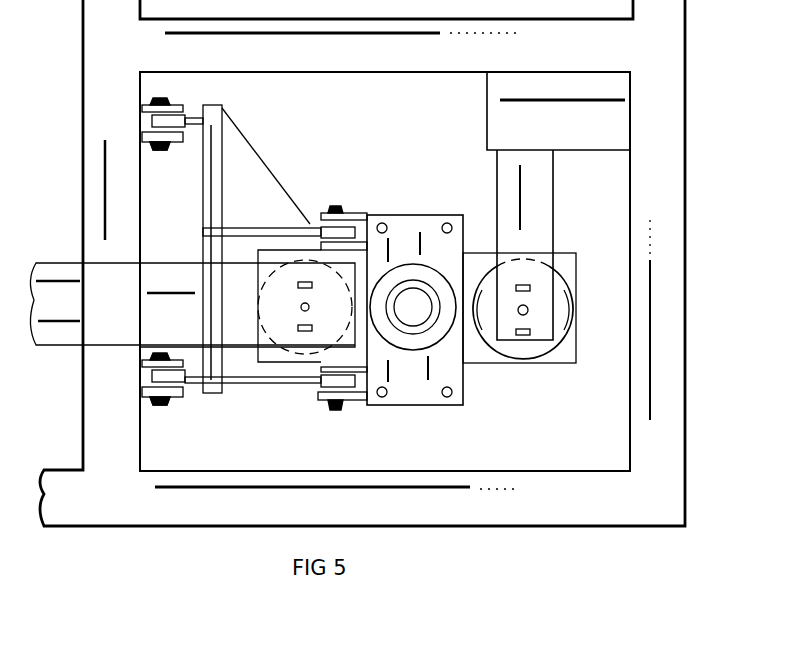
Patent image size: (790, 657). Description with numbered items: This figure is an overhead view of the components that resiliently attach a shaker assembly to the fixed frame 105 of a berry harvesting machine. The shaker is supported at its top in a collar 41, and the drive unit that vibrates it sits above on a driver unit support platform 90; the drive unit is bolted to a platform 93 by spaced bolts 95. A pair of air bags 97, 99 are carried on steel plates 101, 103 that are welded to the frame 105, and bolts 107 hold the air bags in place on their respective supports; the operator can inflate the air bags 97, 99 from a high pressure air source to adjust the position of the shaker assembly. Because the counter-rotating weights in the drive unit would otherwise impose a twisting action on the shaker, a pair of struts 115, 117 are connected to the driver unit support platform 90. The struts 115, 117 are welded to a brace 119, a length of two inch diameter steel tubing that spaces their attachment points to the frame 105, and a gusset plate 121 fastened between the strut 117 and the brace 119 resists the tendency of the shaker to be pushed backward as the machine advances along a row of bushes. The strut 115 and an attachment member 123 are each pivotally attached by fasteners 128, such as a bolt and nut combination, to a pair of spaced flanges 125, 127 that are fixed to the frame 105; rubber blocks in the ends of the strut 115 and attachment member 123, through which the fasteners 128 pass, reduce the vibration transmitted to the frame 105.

The collar 41 is at (413, 289).
The driver unit support platform 90 is at (449, 413).
The platform 93 is at (405, 397).
The bolts 95 is at (381, 398).
The air bag 97 is at (320, 262).
The air bag 99 is at (562, 303).
The steel plate 101 is at (182, 340).
The steel plate 103 is at (541, 197).
The frame 105 is at (680, 222).
The bolts 107 is at (304, 311).
The strut 115 is at (250, 382).
The strut 117 is at (280, 223).
The brace 119 is at (203, 207).
The gusset plate 121 is at (266, 166).
The attachment member 123 is at (192, 118).
The flange 125 is at (142, 391).
The flange 127 is at (142, 137).
The fasteners 128 is at (168, 137).